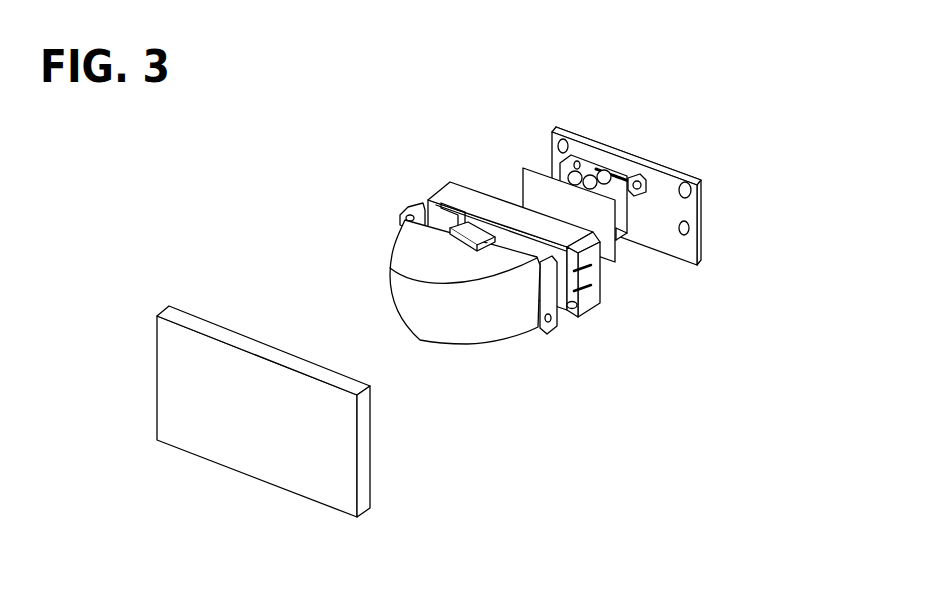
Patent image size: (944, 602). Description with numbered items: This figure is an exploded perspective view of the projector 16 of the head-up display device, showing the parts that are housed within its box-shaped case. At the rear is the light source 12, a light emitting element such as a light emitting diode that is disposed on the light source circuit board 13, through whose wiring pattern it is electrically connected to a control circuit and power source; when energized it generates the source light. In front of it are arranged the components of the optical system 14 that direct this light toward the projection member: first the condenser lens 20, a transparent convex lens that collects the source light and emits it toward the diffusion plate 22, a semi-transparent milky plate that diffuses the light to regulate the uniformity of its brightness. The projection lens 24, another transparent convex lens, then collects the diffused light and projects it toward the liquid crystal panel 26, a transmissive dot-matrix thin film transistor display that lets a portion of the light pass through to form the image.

The light source 12 is at (645, 198).
The light source circuit board 13 is at (684, 208).
The optical system 14 is at (443, 336).
The projector 16 is at (358, 198).
The condenser lens 20 is at (623, 233).
The diffusion plate 22 is at (616, 244).
The projection lens 24 is at (467, 330).
The liquid crystal panel 26 is at (367, 478).